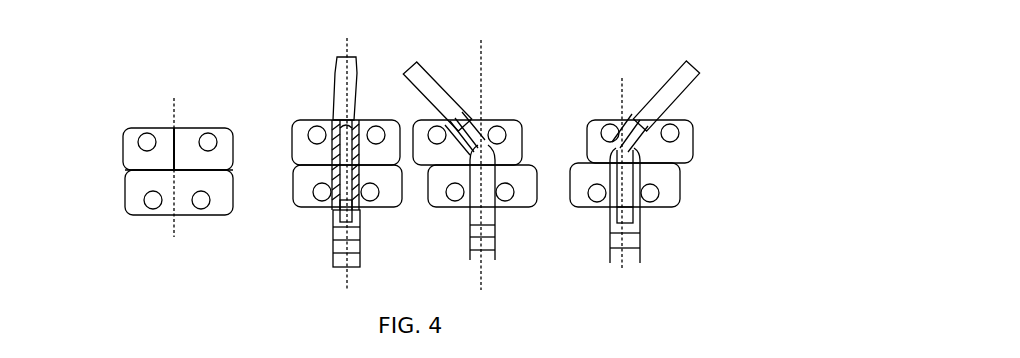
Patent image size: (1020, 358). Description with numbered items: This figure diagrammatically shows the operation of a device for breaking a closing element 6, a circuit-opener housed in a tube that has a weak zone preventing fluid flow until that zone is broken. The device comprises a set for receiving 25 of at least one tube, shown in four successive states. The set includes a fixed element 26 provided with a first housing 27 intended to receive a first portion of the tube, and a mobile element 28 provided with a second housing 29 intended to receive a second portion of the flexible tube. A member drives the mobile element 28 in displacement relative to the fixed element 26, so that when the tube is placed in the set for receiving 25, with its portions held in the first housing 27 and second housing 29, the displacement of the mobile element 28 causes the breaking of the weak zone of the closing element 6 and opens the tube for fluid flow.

The closing element 6 is at (357, 73).
The set for receiving 25 is at (140, 220).
The fixed element 26 is at (220, 207).
The first housing 27 is at (167, 203).
The mobile element 28 is at (125, 150).
The second housing 29 is at (180, 150).